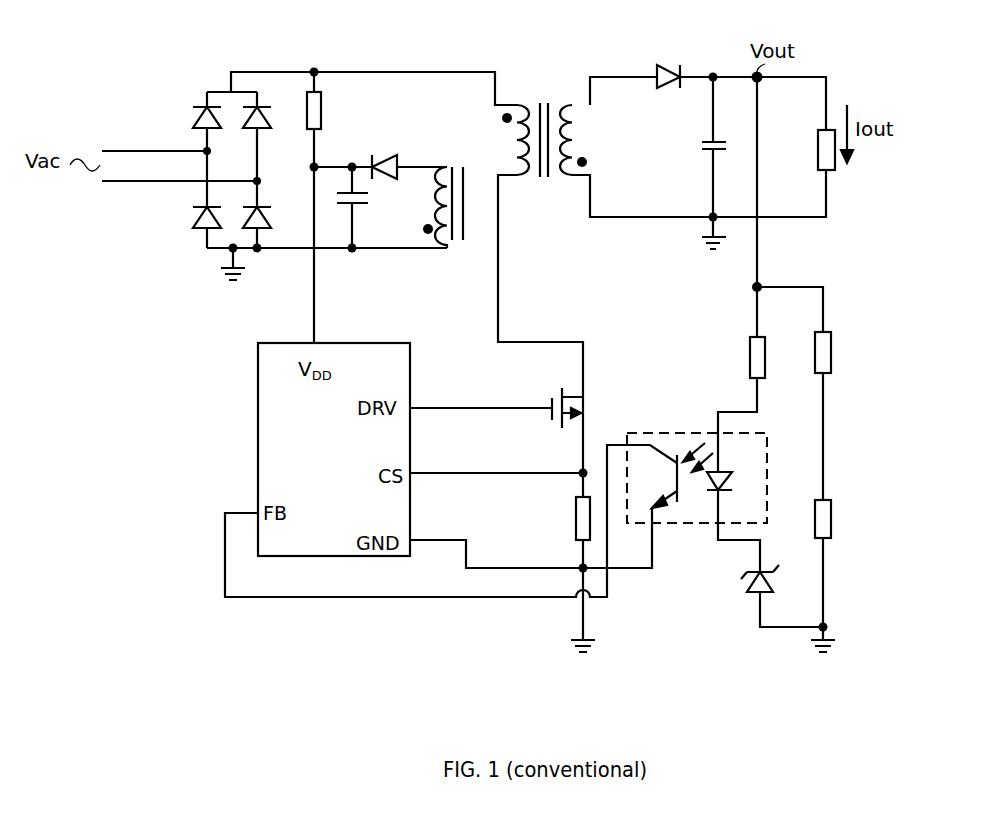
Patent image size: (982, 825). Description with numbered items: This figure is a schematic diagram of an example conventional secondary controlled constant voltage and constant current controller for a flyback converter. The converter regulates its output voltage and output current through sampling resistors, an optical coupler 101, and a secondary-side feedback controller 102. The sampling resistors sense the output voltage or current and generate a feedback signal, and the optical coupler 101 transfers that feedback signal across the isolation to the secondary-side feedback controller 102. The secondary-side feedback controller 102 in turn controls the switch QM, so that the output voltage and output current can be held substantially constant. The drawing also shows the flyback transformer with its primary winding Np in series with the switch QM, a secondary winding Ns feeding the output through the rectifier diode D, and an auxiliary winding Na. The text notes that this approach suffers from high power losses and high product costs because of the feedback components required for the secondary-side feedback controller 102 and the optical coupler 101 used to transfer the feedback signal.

The optical coupler 101 is at (763, 517).
The secondary-side feedback controller 102 is at (318, 453).
The switch QM is at (583, 378).
The output rectifier diode D is at (662, 74).
The transformer primary winding Np is at (512, 140).
The transformer secondary winding Ns is at (587, 140).
The transformer auxiliary winding Na is at (447, 218).